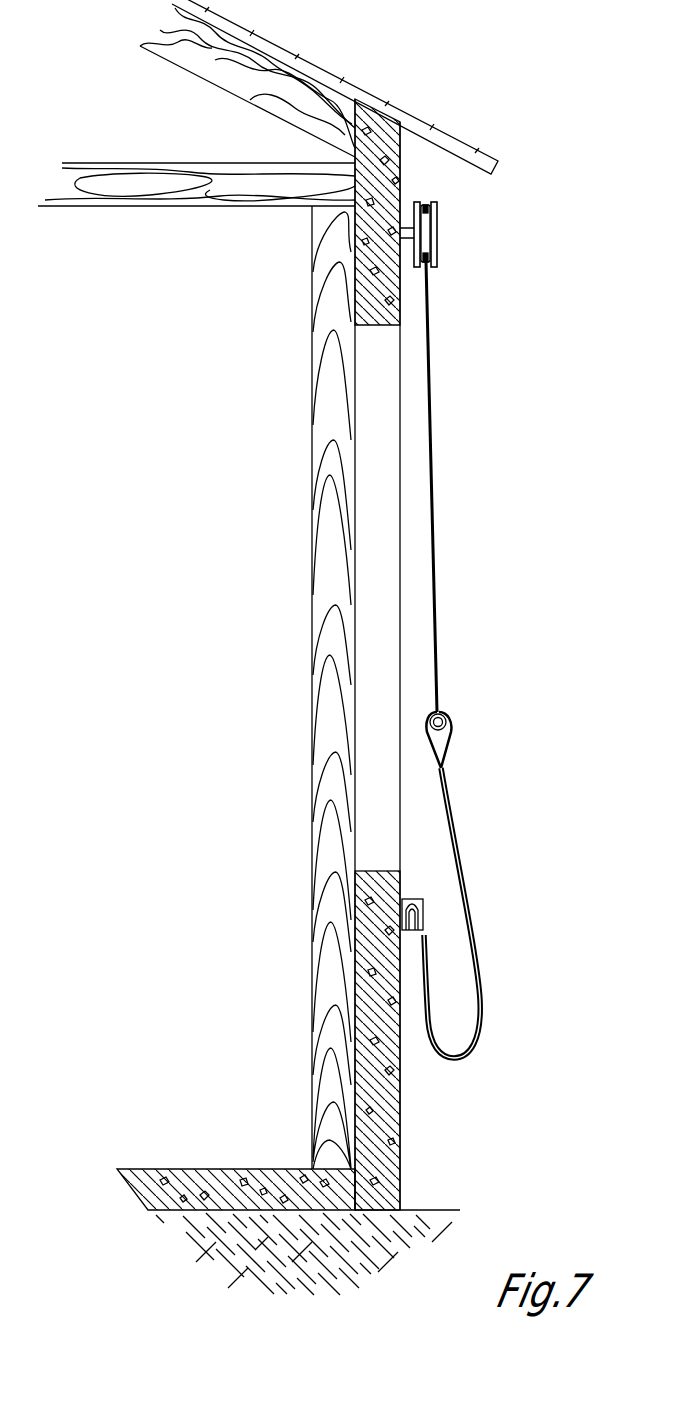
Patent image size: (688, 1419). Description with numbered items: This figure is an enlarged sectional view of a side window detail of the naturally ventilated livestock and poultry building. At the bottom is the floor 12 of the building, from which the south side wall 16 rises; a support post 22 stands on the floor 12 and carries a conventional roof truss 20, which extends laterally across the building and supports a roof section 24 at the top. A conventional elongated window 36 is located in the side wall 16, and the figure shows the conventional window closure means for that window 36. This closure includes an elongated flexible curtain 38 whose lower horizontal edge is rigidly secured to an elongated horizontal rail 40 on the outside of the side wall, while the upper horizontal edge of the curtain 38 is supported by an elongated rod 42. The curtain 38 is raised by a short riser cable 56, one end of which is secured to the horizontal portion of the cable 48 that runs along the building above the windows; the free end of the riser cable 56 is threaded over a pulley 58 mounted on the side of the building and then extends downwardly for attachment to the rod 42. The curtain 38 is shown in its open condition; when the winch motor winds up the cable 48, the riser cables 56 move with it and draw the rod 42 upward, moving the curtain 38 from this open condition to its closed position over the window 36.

The floor 12 is at (178, 1168).
The south side wall 16 is at (378, 1006).
The roof truss 20 is at (165, 163).
The support post 22 is at (337, 277).
The roof section 24 is at (376, 98).
The window 36 is at (378, 438).
The flexible curtain 38 is at (460, 852).
The horizontal rail 40 is at (425, 914).
The rod 42 is at (452, 716).
The cable 48 is at (425, 204).
The riser cable 56 is at (431, 322).
The pulley 58 is at (437, 239).